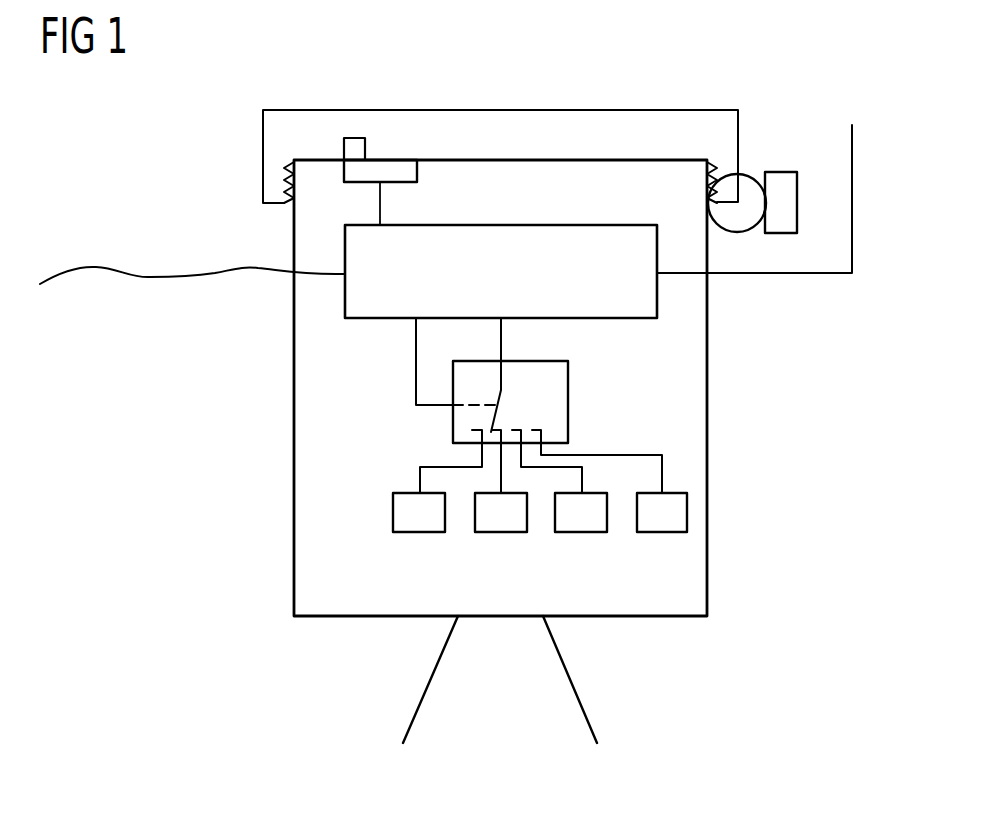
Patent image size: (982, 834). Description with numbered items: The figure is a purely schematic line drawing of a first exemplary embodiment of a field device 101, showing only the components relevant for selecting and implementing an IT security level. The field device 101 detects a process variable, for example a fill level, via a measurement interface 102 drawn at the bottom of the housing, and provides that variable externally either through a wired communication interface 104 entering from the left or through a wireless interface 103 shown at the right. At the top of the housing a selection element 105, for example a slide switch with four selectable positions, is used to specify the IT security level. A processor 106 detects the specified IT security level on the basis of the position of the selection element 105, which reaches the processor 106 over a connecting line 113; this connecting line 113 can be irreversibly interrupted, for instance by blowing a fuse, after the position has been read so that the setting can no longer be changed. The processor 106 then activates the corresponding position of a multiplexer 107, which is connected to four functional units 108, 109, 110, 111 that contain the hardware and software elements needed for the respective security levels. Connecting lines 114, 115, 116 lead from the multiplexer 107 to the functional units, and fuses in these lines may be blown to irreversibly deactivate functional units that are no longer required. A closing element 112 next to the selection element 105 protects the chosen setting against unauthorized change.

The field device 101 is at (707, 391).
The measurement interface 102 is at (578, 690).
The wireless interface 103 is at (852, 200).
The wired communication interface 104 is at (156, 275).
The selection element 105 is at (365, 149).
The processor 106 is at (380, 318).
The multiplexer 107 is at (568, 383).
The functional unit 108 is at (419, 532).
The functional unit 109 is at (500, 532).
The functional unit 110 is at (580, 532).
The functional unit 111 is at (662, 532).
The closing element 112 is at (781, 172).
The connecting line 113 is at (380, 204).
The connecting line 114 is at (419, 481).
The connecting line 115 is at (664, 475).
The connecting line 116 is at (548, 467).